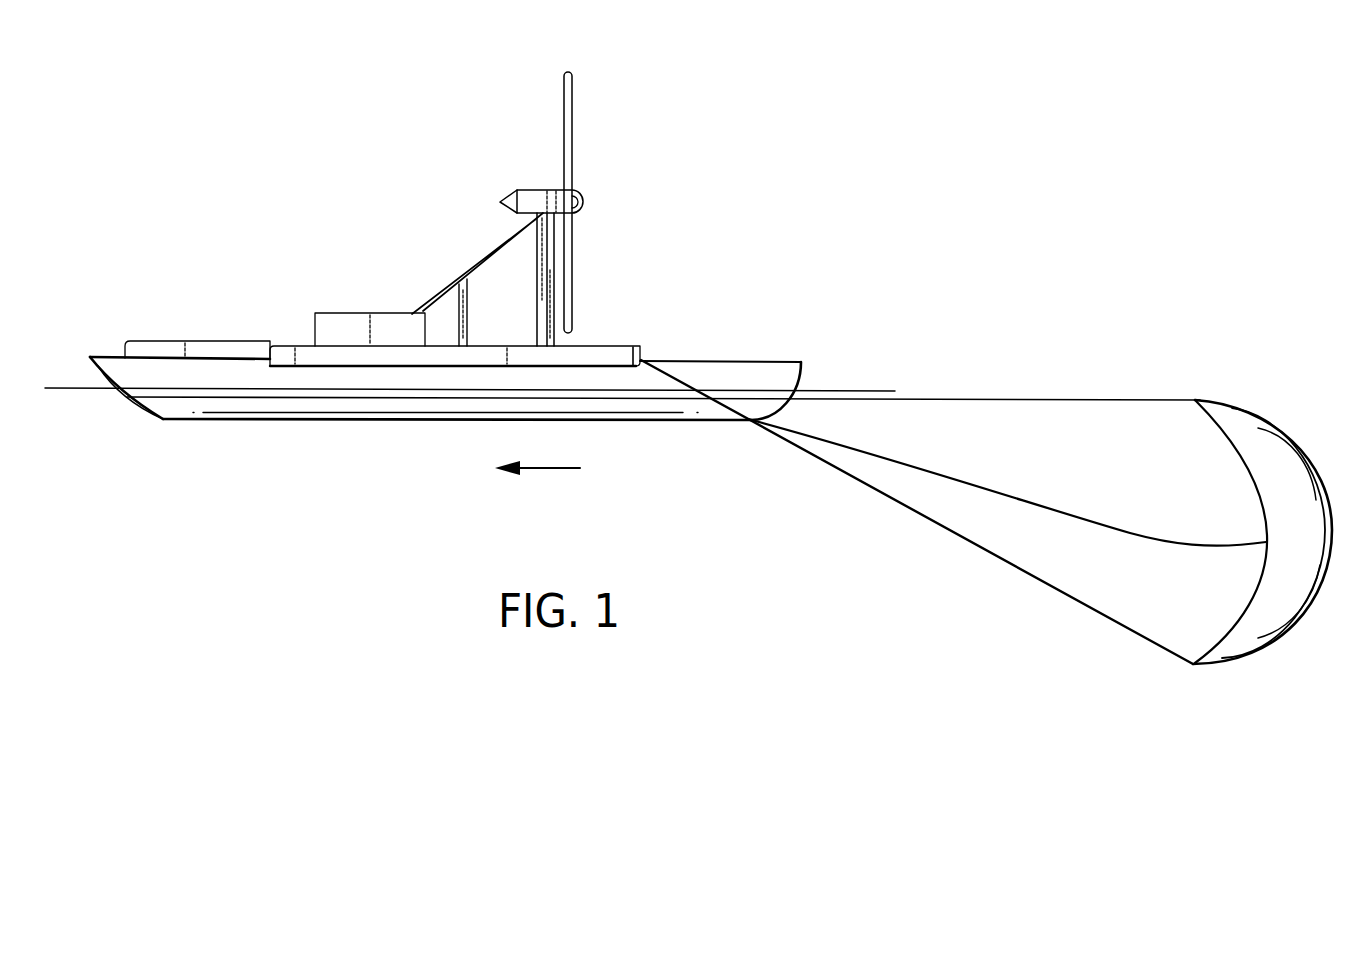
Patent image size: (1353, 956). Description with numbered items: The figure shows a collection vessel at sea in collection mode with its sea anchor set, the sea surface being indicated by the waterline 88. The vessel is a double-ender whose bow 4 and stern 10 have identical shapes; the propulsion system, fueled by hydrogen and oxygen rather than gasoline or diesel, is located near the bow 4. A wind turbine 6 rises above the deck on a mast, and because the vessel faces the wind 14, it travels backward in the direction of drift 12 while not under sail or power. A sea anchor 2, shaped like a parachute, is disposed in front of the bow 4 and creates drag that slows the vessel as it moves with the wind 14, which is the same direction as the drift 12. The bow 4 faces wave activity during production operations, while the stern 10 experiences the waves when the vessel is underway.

The sea anchor 2 is at (1297, 546).
The bow 4 is at (743, 373).
The wind turbine 6 is at (531, 193).
The stern 10 is at (158, 377).
The direction of drift 12 is at (555, 469).
The wind 14 is at (871, 118).
The waterline 88 is at (865, 391).